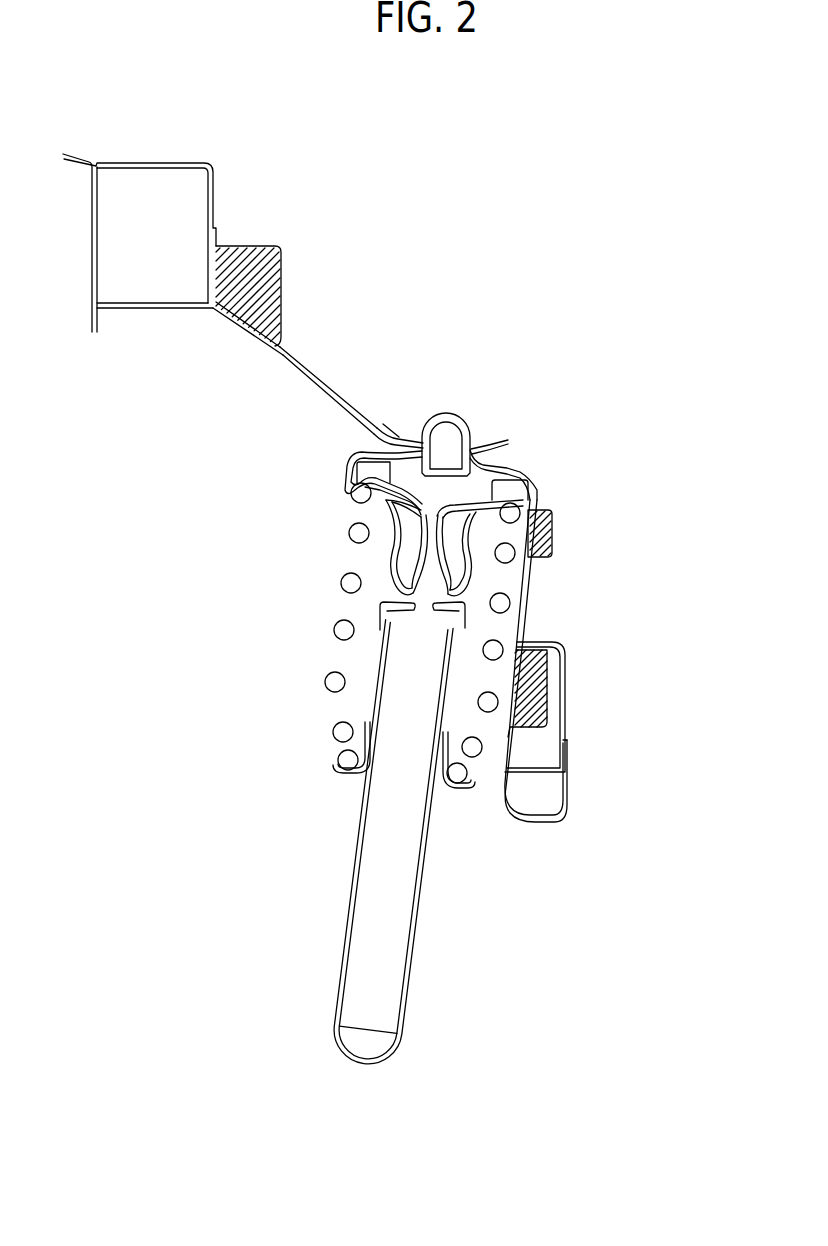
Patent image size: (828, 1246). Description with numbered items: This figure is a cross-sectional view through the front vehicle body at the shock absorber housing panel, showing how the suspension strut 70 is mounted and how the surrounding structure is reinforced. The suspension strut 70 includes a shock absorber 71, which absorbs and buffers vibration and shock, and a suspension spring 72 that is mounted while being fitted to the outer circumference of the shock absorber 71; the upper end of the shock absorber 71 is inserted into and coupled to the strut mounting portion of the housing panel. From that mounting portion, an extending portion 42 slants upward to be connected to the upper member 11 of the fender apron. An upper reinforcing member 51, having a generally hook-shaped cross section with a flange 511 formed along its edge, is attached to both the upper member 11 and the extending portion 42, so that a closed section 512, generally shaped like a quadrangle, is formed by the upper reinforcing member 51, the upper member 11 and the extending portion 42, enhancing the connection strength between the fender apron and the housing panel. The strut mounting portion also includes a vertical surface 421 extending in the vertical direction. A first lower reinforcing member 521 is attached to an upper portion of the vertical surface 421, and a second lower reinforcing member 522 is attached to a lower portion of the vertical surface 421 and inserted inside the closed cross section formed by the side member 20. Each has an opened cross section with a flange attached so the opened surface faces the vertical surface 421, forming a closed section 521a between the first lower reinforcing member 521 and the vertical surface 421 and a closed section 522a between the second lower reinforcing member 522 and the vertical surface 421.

The upper member 11 is at (143, 160).
The upper reinforcing member 51 is at (244, 289).
The flange 511 is at (288, 353).
The closed section 512 is at (238, 288).
The extending portion 42 is at (375, 398).
The vertical surface 421 is at (512, 620).
The first lower reinforcing member 521 is at (581, 540).
The closed section 521a is at (540, 547).
The second lower reinforcing member 522 is at (581, 707).
The closed section 522a is at (530, 688).
The side member 20 is at (568, 752).
The suspension strut 70 is at (361, 775).
The shock absorber 71 is at (349, 934).
The suspension spring 72 is at (334, 632).